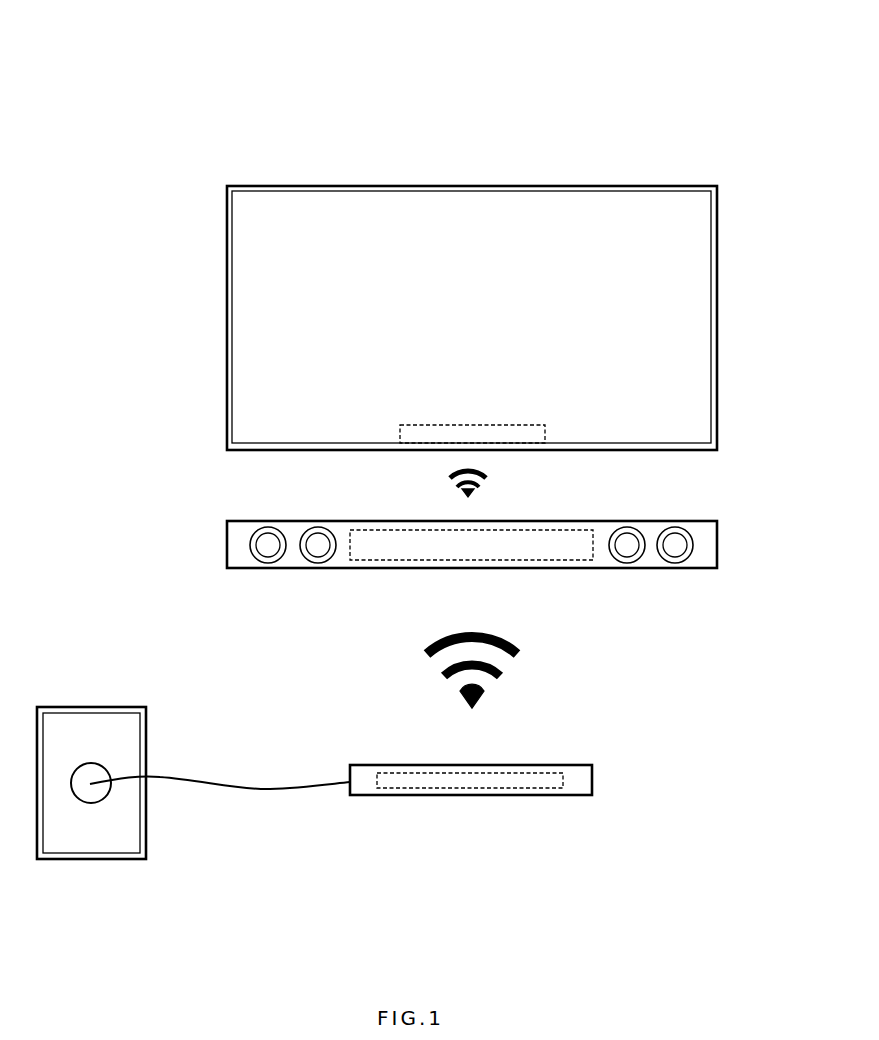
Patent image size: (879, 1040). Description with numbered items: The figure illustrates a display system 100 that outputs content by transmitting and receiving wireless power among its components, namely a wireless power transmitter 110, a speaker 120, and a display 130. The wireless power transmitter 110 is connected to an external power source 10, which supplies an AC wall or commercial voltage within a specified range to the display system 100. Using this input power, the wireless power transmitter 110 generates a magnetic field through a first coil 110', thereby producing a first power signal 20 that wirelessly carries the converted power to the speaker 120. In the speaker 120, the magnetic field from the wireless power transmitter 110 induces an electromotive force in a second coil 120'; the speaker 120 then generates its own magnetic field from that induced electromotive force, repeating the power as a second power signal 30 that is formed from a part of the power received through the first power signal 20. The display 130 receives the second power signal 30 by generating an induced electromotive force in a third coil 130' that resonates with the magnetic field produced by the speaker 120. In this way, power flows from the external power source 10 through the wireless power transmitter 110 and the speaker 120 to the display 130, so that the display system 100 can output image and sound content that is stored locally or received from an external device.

The display system 100 is at (210, 90).
The display 130 is at (518, 318).
The third coil 130' is at (425, 459).
The second power signal 30 is at (514, 482).
The speaker 120 is at (506, 544).
The second coil 120' is at (471, 583).
The first power signal 20 is at (529, 674).
The external power source 10 is at (90, 707).
The wireless power transmitter 110 is at (517, 780).
The first coil 110' is at (470, 823).